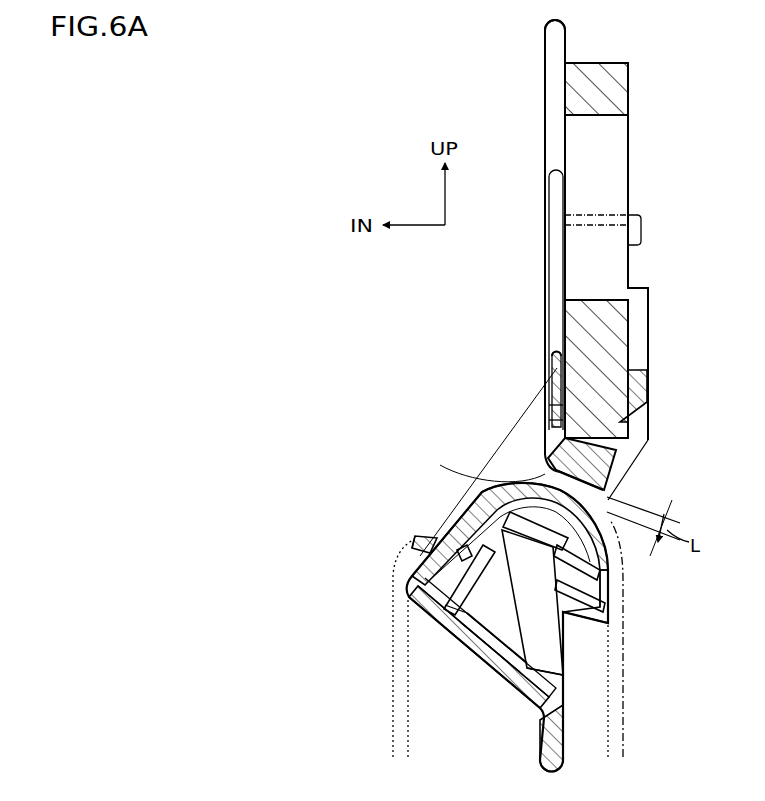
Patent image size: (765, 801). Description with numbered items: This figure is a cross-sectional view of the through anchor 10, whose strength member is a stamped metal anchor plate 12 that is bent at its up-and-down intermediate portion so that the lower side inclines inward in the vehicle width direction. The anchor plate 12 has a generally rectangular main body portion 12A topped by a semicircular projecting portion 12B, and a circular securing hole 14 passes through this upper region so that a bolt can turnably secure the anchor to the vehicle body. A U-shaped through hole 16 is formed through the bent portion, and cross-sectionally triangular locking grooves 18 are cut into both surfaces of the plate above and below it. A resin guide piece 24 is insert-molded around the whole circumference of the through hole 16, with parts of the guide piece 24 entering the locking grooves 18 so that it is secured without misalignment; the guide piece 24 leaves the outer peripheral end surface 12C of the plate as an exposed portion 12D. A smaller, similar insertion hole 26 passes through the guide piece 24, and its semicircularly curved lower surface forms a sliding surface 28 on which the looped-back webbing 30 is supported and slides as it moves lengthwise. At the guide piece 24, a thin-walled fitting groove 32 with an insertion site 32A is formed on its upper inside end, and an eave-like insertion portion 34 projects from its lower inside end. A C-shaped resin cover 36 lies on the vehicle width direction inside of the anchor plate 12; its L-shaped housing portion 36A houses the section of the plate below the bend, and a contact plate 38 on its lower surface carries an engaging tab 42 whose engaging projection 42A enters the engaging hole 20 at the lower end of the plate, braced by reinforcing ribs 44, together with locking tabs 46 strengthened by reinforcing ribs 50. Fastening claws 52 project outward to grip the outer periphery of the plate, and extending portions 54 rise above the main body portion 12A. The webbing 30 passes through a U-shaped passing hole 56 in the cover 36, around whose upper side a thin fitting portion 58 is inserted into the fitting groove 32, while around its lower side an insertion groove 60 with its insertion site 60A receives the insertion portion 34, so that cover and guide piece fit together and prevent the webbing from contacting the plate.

The through anchor 10 is at (508, 76).
The anchor plate 12 is at (630, 62).
The main body portion 12A is at (630, 337).
The projecting portion 12B is at (630, 95).
The outer peripheral end surface 12C is at (600, 63).
The exposed portion 12D is at (477, 630).
The securing hole 14 is at (606, 115).
The through hole 16 is at (617, 450).
The locking grooves 18 is at (648, 402).
The engaging hole 20 is at (557, 607).
The guide piece 24 is at (656, 444).
The insertion hole 26 is at (498, 483).
The sliding surface 28 is at (492, 473).
The webbing 30 is at (385, 673).
The fitting groove 32 is at (548, 393).
The insertion site 32A is at (550, 378).
The insertion portion 34 is at (410, 570).
The cover 36 is at (545, 220).
The housing portion 36A is at (423, 633).
The contact plate 38 is at (502, 637).
The engaging tab 42 is at (467, 527).
The engaging projection 42A is at (550, 672).
The reinforcing ribs 44 is at (443, 580).
The locking tabs 46 is at (608, 613).
The reinforcing ribs 50 is at (573, 653).
The fastening claws 52 is at (642, 228).
The extending portions 54 is at (545, 108).
The passing hole 56 is at (555, 418).
The fitting portion 58 is at (548, 412).
The insertion groove 60 is at (413, 545).
The insertion site 60A is at (413, 538).